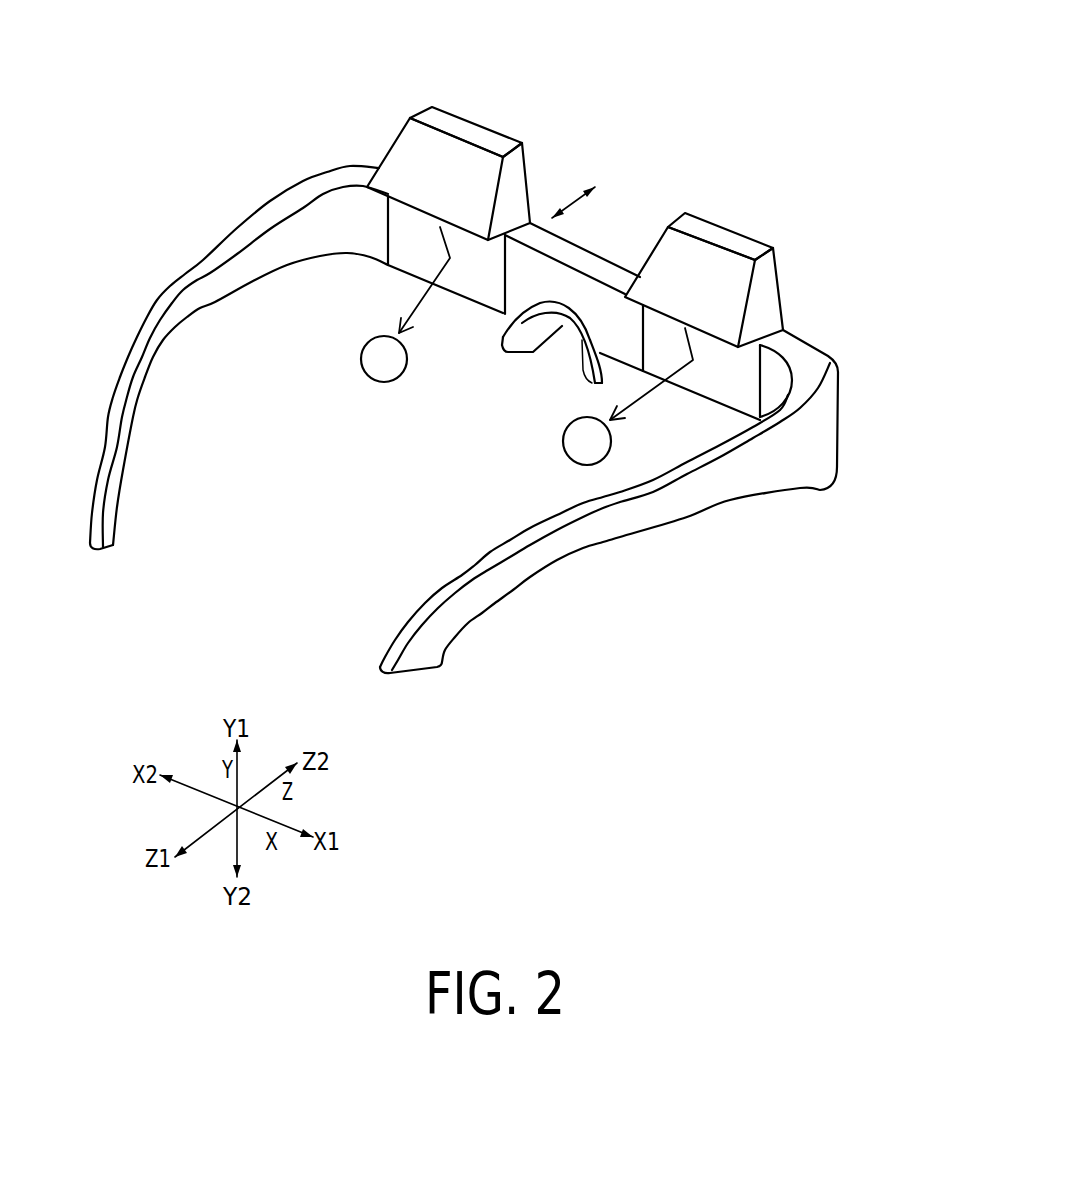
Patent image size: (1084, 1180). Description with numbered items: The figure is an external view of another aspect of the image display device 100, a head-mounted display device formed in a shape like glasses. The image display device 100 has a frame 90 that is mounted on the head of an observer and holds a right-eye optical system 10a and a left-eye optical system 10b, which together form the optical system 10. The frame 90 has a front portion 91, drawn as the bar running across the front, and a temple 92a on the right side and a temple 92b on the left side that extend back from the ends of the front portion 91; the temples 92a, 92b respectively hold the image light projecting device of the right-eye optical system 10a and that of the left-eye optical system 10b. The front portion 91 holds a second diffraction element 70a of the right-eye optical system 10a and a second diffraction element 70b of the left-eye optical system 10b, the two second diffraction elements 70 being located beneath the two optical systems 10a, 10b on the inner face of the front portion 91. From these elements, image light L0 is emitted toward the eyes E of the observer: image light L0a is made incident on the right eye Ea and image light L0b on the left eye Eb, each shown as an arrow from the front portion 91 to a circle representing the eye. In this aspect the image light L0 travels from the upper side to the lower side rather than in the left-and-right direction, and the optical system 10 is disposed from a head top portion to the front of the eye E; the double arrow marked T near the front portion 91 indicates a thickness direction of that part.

The image display device 100 is at (638, 122).
The optical system 10 is at (374, 32).
The right-eye optical system 10a is at (743, 232).
The left-eye optical system 10b is at (453, 117).
The frame 90 is at (145, 302).
The front portion 91 is at (588, 257).
The temple 92a is at (710, 488).
The temple 92b is at (200, 255).
The second diffraction element 70 is at (580, 285).
The second diffraction element 70a is at (740, 371).
The second diffraction element 70b is at (396, 227).
The eye E is at (450, 416).
The right eye Ea is at (565, 455).
The left eye Eb is at (363, 370).
The image light L0 is at (553, 339).
The image light L0a is at (659, 389).
The image light L0b is at (437, 296).
The thickness direction T is at (573, 207).